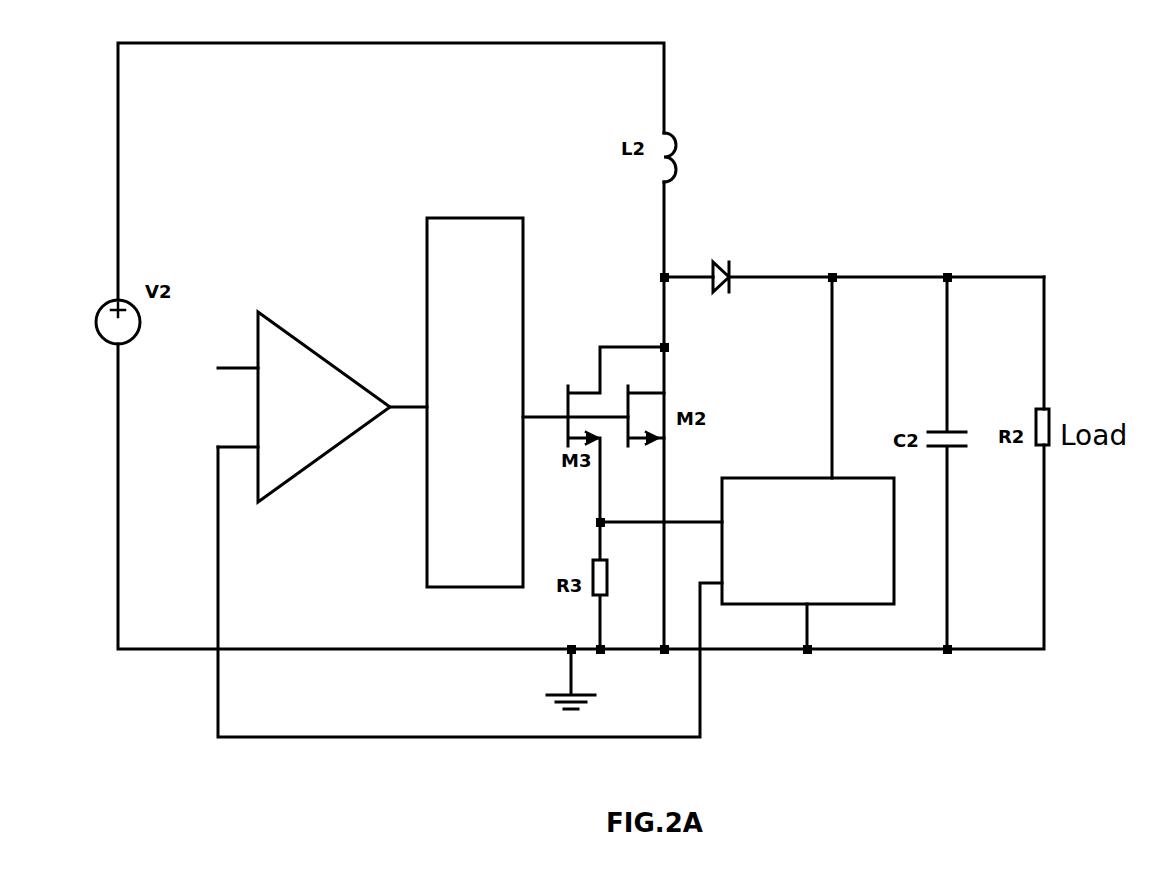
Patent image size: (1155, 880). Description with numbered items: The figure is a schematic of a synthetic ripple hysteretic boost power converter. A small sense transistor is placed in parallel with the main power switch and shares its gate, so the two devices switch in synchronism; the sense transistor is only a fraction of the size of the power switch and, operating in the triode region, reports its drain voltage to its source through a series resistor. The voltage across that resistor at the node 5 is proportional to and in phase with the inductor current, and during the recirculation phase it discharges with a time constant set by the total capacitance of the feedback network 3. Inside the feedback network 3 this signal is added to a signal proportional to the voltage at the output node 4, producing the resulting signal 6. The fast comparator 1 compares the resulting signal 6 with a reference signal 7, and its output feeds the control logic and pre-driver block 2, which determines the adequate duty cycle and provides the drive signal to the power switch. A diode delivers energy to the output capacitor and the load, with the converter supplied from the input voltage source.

The fast comparator 1 is at (293, 332).
The control logic and pre-driver block 2 is at (499, 218).
The feedback network 3 is at (852, 604).
The output node 4 is at (858, 277).
The node 5 is at (597, 490).
The resulting signal 6 is at (428, 735).
The reference signal 7 is at (227, 365).